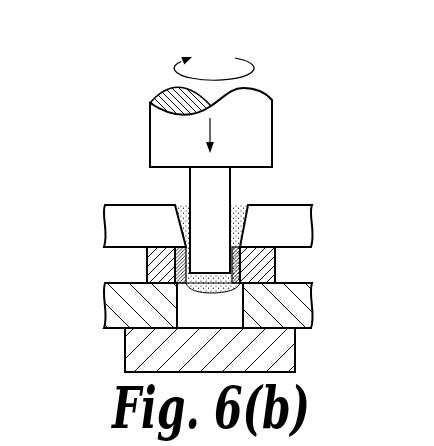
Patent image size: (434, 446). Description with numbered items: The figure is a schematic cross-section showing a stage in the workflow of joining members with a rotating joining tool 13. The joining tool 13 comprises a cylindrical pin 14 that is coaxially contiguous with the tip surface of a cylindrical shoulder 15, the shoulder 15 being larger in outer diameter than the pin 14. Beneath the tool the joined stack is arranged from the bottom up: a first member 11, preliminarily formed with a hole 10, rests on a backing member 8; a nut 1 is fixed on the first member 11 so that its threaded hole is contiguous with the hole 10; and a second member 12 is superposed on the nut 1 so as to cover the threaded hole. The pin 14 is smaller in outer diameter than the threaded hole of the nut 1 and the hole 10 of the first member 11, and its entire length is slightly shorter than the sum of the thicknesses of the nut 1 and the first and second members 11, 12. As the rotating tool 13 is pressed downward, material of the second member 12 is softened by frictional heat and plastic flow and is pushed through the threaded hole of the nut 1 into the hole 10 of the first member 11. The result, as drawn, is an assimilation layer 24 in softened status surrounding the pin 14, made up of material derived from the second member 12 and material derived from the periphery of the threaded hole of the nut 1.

The joining tool 13 is at (204, 165).
The cylindrical shoulder 15 is at (266, 116).
The cylindrical pin 14 is at (220, 187).
The assimilation layer 24 is at (180, 206).
The second member 12 is at (313, 219).
The nut 1 is at (278, 263).
The hole 10 is at (160, 301).
The first member 11 is at (117, 326).
The backing member 8 is at (293, 351).